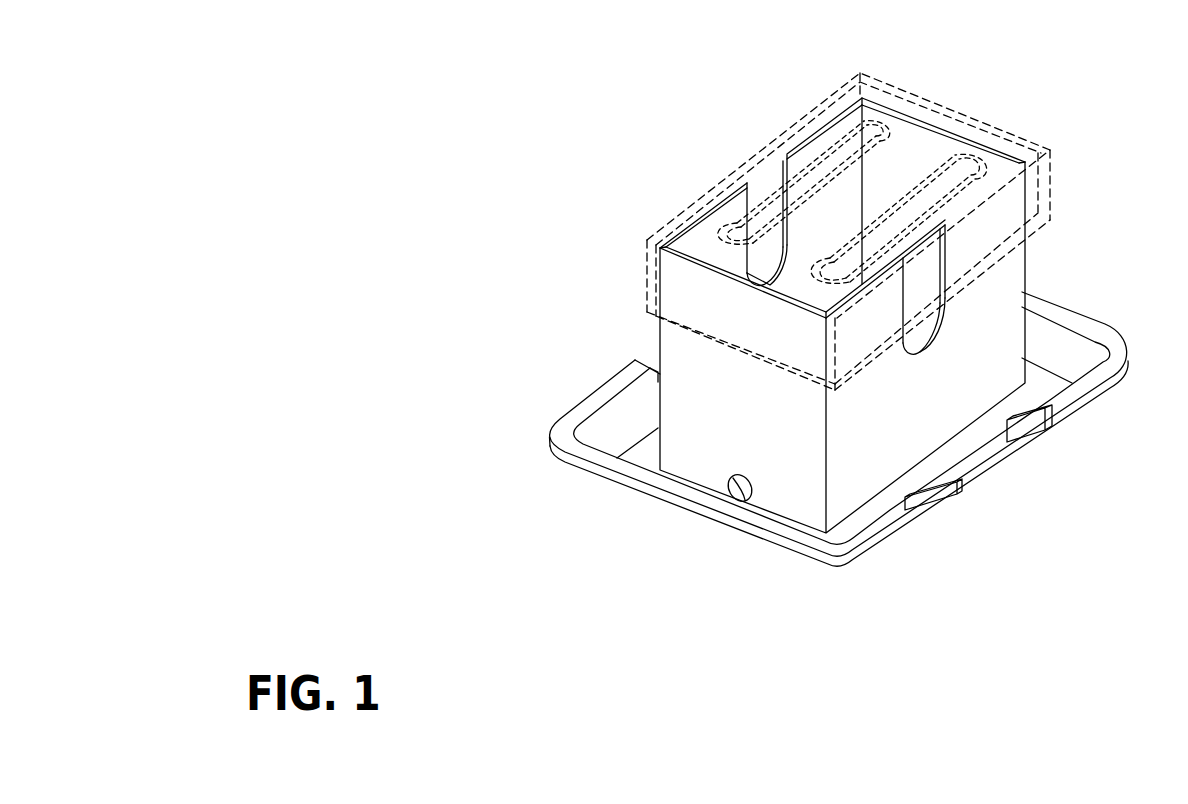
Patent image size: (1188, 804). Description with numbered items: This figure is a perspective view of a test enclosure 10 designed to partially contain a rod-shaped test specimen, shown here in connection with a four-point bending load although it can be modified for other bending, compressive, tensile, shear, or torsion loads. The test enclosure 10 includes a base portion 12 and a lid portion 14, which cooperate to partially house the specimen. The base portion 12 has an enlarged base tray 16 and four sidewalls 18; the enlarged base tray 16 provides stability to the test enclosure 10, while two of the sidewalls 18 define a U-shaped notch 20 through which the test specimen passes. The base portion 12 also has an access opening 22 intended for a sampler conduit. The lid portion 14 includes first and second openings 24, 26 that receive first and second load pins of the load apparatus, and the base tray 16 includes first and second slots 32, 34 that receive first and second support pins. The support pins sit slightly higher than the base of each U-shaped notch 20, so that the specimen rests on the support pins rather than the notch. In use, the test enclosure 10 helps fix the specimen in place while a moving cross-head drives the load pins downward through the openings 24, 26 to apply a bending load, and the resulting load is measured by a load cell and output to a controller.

The test enclosure 10 is at (1058, 82).
The base portion 12 is at (503, 387).
The lid portion 14 is at (633, 262).
The enlarged base tray 16 is at (867, 525).
The sidewalls 18 is at (734, 433).
The U-shaped notch 20 is at (927, 350).
The access opening 22 is at (740, 498).
The first opening 24 is at (758, 184).
The second opening 26 is at (935, 160).
The first slot 32 is at (648, 364).
The second slot 34 is at (960, 462).